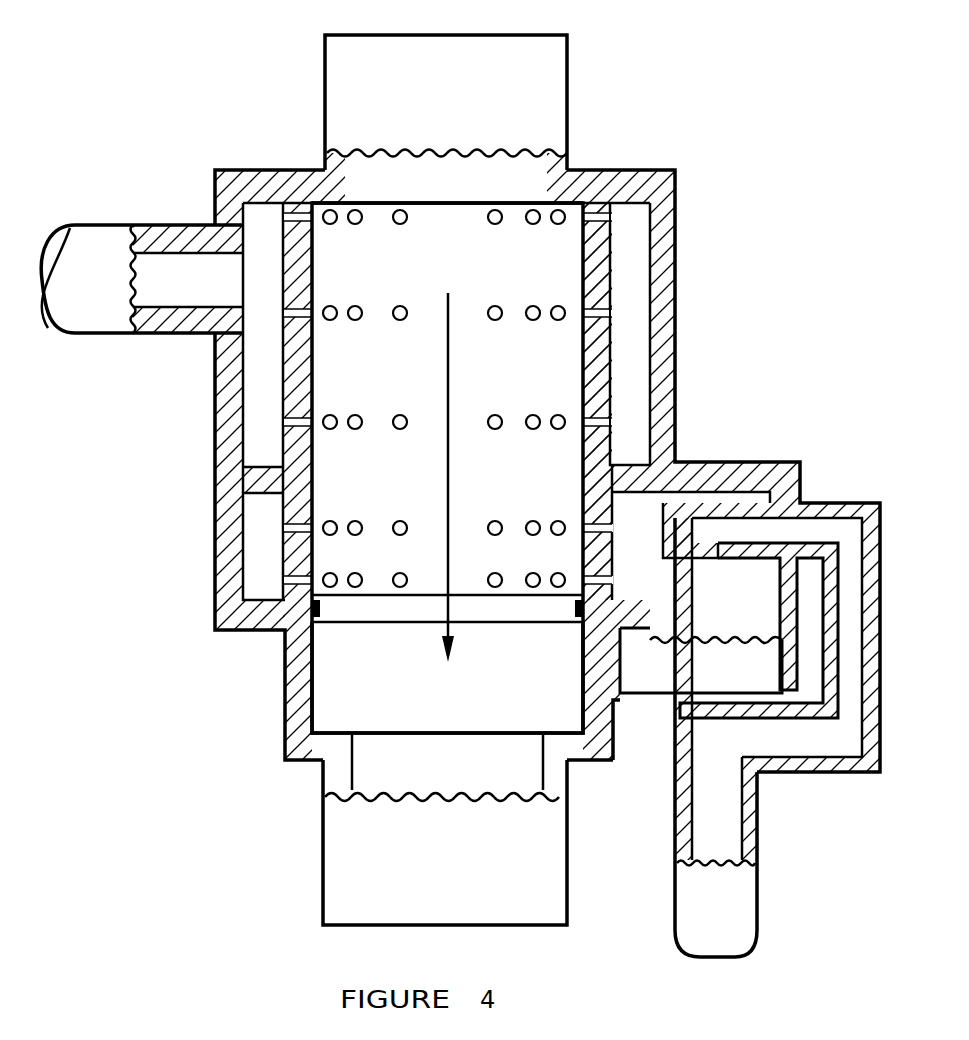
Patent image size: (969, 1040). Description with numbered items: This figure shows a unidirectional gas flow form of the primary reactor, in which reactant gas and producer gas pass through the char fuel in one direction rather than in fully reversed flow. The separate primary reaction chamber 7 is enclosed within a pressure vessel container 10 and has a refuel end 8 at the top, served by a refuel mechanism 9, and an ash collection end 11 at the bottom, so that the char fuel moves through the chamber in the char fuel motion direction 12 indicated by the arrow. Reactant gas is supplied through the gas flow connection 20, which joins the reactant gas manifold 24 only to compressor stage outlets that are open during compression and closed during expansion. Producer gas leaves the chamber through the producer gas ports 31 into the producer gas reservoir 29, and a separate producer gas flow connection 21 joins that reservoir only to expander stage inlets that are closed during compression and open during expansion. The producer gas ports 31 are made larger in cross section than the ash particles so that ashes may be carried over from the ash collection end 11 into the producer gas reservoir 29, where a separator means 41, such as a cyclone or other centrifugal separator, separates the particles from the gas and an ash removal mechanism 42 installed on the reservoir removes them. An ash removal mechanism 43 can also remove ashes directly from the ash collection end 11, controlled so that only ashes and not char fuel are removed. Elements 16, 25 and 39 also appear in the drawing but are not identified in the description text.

The primary reaction chamber 7 is at (390, 222).
The refuel end 8 is at (470, 232).
The refuel mechanism 9 is at (363, 62).
The pressure vessel container 10 is at (215, 400).
The ash collection end 11 is at (432, 712).
The char fuel motion direction 12 is at (445, 432).
The annular slot 16 is at (647, 258).
The gas flow connection 20 is at (78, 250).
The producer gas flow connection 21 is at (735, 932).
The reactant gas manifold 24 is at (262, 437).
The inlet passage 25 is at (262, 300).
The producer gas reservoir 29 is at (582, 590).
The producer gas ports 31 is at (293, 580).
The bore 39 is at (235, 275).
The separator means 41 is at (710, 540).
The ash removal mechanism 42 is at (695, 672).
The ash removal mechanism 43 is at (355, 888).